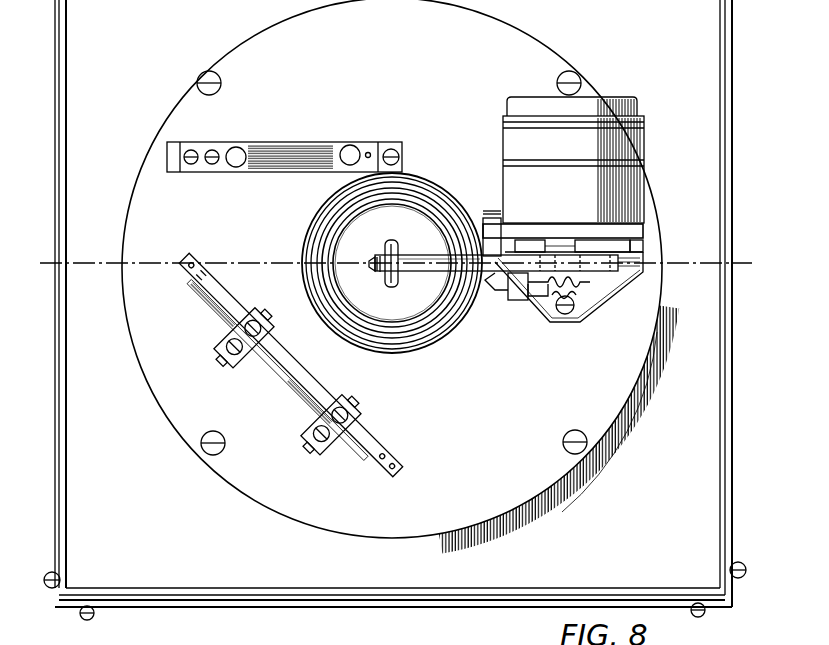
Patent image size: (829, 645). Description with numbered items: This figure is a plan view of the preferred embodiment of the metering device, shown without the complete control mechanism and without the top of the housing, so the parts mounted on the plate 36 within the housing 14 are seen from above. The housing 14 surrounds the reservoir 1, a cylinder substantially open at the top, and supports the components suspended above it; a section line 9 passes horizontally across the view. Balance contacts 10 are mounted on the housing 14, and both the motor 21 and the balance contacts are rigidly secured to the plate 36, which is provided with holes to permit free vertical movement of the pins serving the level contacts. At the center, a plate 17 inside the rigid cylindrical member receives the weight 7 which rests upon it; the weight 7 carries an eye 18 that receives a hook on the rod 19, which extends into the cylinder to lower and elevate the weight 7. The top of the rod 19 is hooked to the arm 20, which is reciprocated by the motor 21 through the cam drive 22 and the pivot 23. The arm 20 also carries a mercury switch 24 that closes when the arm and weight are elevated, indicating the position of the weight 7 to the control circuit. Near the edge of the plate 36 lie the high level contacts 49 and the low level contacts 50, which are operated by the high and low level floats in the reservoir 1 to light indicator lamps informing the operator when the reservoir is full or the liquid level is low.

The reservoir 1 is at (412, 178).
The weight 7 is at (392, 263).
The section line 9 is at (40, 246).
The balance contacts 10 is at (366, 146).
The housing 14 is at (57, 162).
The plate 17 is at (424, 204).
The eye 18 is at (368, 264).
The rod 19 is at (398, 245).
The arm 20 is at (486, 264).
The motor 21 is at (644, 203).
The cam drive 22 is at (597, 300).
The pivot 23 is at (512, 296).
The mercury switch 24 is at (528, 290).
The plate 36 is at (549, 52).
The high level contacts 49 is at (352, 416).
The low level contacts 50 is at (240, 334).